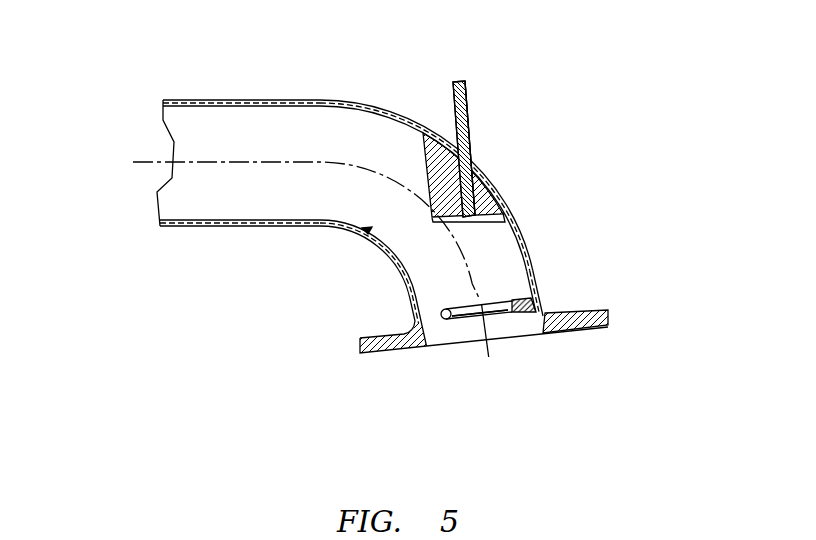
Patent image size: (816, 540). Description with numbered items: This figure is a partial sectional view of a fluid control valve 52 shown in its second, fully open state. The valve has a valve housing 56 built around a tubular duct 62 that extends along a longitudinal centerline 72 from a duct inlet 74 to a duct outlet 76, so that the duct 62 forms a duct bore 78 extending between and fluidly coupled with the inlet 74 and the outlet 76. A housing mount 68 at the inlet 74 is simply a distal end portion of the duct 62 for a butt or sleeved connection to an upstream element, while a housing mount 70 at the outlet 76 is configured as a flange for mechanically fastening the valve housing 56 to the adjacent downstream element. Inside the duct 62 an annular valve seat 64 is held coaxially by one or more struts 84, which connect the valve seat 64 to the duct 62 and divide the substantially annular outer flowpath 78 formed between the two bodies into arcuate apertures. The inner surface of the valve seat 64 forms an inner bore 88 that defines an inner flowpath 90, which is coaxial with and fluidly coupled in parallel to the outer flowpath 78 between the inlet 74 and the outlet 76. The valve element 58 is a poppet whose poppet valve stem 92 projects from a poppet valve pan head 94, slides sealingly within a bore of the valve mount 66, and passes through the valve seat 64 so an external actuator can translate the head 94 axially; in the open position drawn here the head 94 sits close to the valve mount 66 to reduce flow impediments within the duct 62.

The fluid control valve 52 is at (515, 87).
The valve housing 56 is at (388, 98).
The valve element 58 is at (475, 102).
The tubular duct 62 is at (526, 240).
The annular valve seat 64 is at (449, 323).
The valve mount 66 is at (480, 178).
The housing mount 68 is at (181, 98).
The housing mount 70 is at (593, 313).
The longitudinal centerline 72 is at (133, 162).
The duct inlet 74 is at (183, 136).
The duct outlet 76 is at (520, 331).
The duct bore 78 is at (245, 149).
The strut 84 is at (532, 286).
The inner bore 88 is at (498, 320).
The inner flowpath 90 is at (494, 375).
The poppet valve stem 92 is at (468, 130).
The poppet valve pan head 94 is at (496, 228).